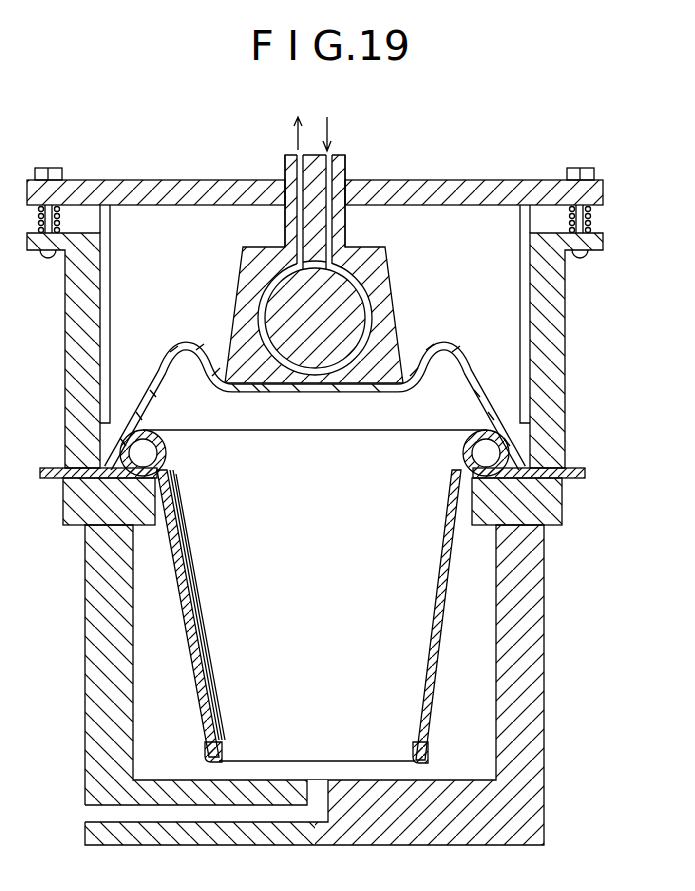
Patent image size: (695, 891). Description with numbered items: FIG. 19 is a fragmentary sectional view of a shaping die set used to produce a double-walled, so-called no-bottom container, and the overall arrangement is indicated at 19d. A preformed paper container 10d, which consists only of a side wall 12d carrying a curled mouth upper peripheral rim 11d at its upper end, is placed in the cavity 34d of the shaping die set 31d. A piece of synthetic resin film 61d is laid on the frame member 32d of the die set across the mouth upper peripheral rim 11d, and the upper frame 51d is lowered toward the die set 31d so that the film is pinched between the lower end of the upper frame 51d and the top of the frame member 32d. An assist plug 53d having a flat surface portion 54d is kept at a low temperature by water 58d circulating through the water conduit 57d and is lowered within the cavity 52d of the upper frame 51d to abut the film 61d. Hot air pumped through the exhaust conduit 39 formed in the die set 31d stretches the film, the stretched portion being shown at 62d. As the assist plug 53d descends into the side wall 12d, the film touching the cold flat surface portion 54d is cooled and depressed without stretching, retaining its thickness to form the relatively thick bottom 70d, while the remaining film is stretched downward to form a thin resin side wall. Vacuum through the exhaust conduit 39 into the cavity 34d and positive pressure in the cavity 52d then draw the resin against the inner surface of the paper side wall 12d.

The preformed paper container 10d is at (187, 680).
The mouth upper peripheral rim 11d is at (462, 447).
The side wall 12d is at (441, 630).
The forming station assembly 19d is at (417, 420).
The shaping die set 31d is at (546, 590).
The frame member 32d is at (556, 506).
The cavity 34d is at (490, 677).
The exhaust conduit 39 is at (100, 814).
The upper frame 51d is at (552, 322).
The cavity 52d is at (470, 382).
The assist plug 53d is at (372, 263).
The flat surface portion 54d is at (346, 375).
The water conduit 57d is at (325, 172).
The water 58d is at (325, 117).
The synthetic resin film 61d is at (584, 481).
The stretched film 62d is at (176, 341).
The relatively thick bottom 70d is at (243, 393).